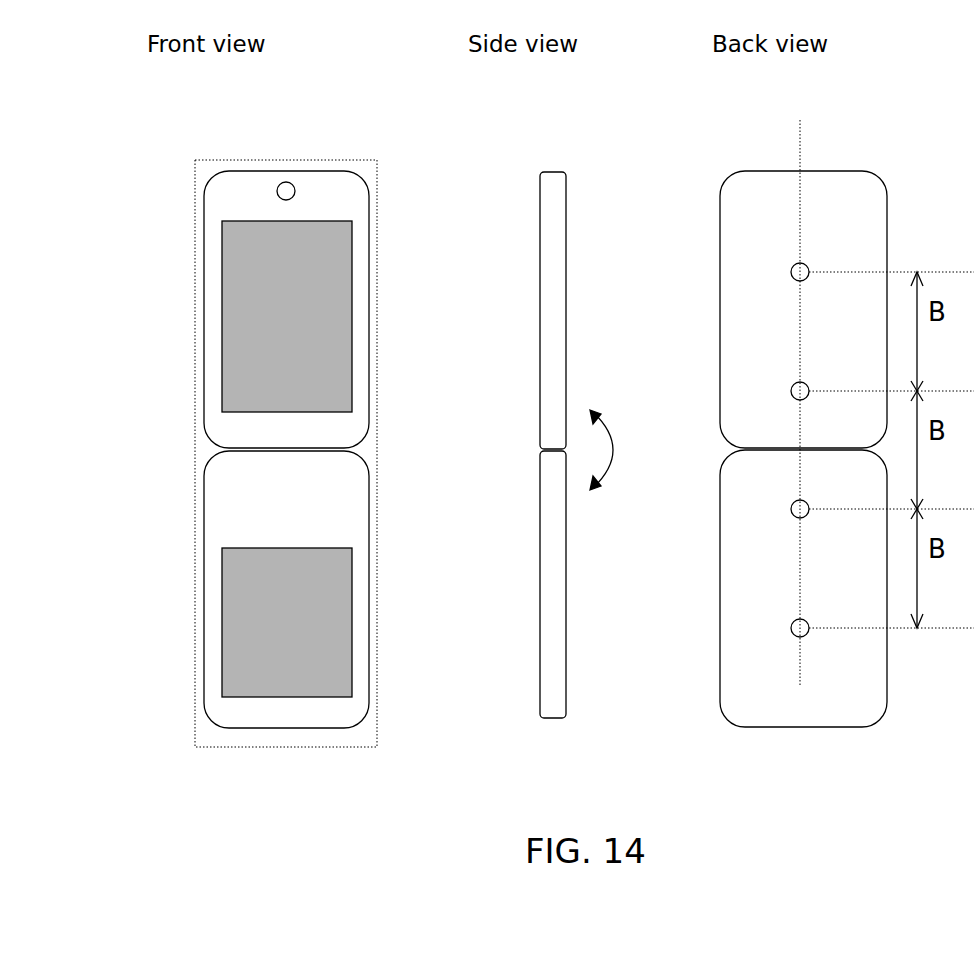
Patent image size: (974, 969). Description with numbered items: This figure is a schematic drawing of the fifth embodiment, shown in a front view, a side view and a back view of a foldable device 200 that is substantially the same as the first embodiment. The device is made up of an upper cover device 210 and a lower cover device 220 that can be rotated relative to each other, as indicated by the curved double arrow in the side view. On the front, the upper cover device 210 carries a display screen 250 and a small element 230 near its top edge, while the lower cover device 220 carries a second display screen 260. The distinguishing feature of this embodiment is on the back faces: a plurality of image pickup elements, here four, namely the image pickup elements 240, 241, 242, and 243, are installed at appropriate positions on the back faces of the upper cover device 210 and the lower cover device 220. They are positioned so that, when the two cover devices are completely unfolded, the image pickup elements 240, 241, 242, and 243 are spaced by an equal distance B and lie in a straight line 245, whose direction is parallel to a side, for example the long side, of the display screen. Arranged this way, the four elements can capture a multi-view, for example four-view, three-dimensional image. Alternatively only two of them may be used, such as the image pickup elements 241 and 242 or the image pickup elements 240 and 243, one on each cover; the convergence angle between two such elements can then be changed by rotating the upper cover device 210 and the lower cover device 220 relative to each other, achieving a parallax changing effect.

The electronic device 200 is at (311, 432).
The upper cover device 210 is at (517, 267).
The lower cover device 220 is at (513, 630).
The camera 230 is at (266, 145).
The image pickup element 240 is at (790, 270).
The image pickup element 241 is at (790, 389).
The image pickup element 242 is at (790, 507).
The image pickup element 243 is at (790, 626).
The straight line 245 is at (834, 396).
The first display 250 is at (236, 316).
The second display 260 is at (236, 622).